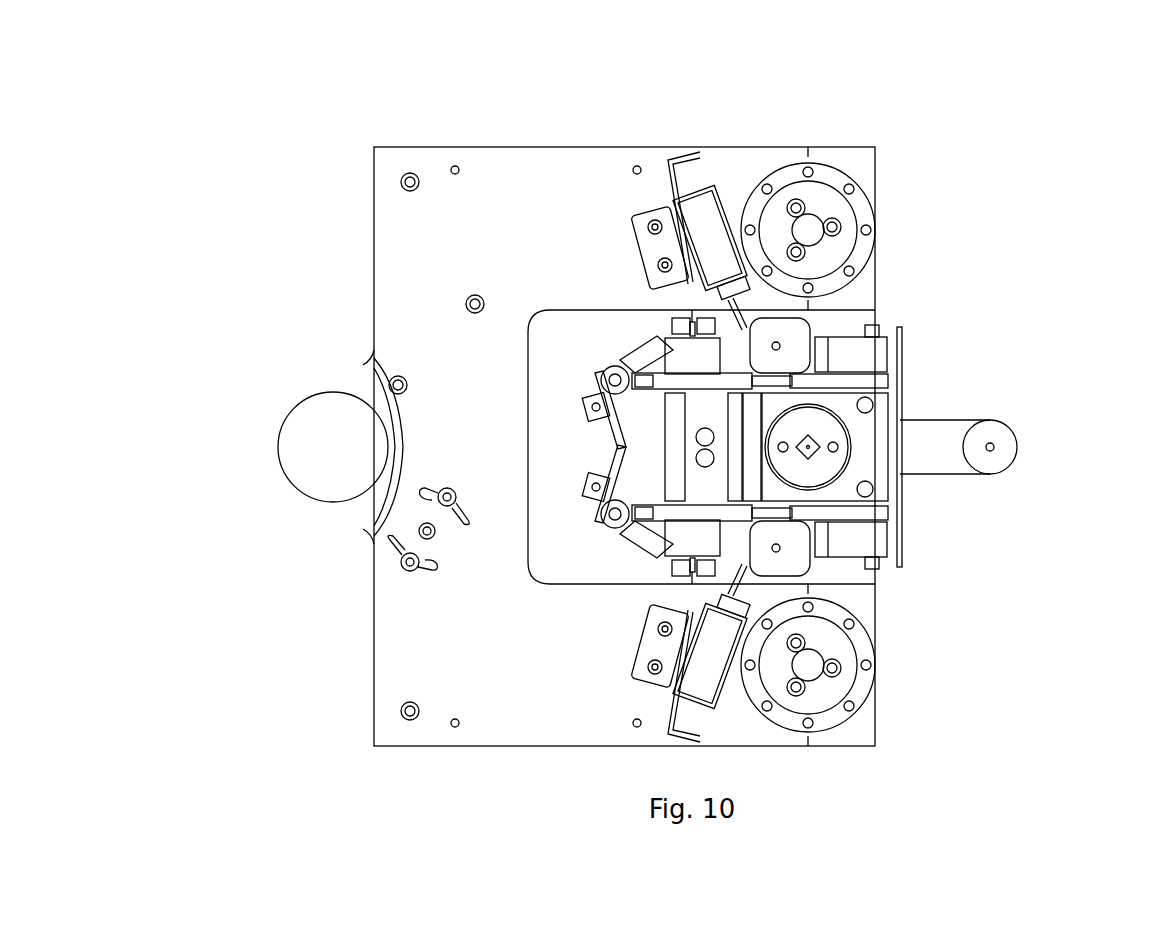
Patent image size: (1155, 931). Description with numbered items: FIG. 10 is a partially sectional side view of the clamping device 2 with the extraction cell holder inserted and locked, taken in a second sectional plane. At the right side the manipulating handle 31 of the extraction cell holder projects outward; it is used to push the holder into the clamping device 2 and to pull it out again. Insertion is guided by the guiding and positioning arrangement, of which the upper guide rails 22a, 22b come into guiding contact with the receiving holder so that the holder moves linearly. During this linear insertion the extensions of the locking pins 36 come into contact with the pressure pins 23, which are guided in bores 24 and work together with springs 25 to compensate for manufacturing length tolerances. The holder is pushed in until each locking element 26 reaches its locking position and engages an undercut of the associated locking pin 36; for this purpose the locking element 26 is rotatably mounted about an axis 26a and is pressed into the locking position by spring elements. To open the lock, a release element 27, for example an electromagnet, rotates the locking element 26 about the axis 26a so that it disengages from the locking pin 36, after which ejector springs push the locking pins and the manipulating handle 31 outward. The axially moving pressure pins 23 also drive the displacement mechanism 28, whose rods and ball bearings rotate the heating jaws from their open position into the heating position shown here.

The clamping device 2 is at (265, 100).
The upper guide rail 22a is at (872, 352).
The upper guide rail 22b is at (853, 543).
The pressure pin 23 is at (670, 373).
The bore 24 is at (657, 367).
The spring 25 is at (625, 362).
The locking element 26 is at (797, 337).
The axis 26a is at (775, 343).
The release element 27 is at (695, 208).
The displacement mechanism 28 is at (555, 455).
The manipulating handle 31 is at (1002, 435).
The locking pin 36 is at (848, 358).